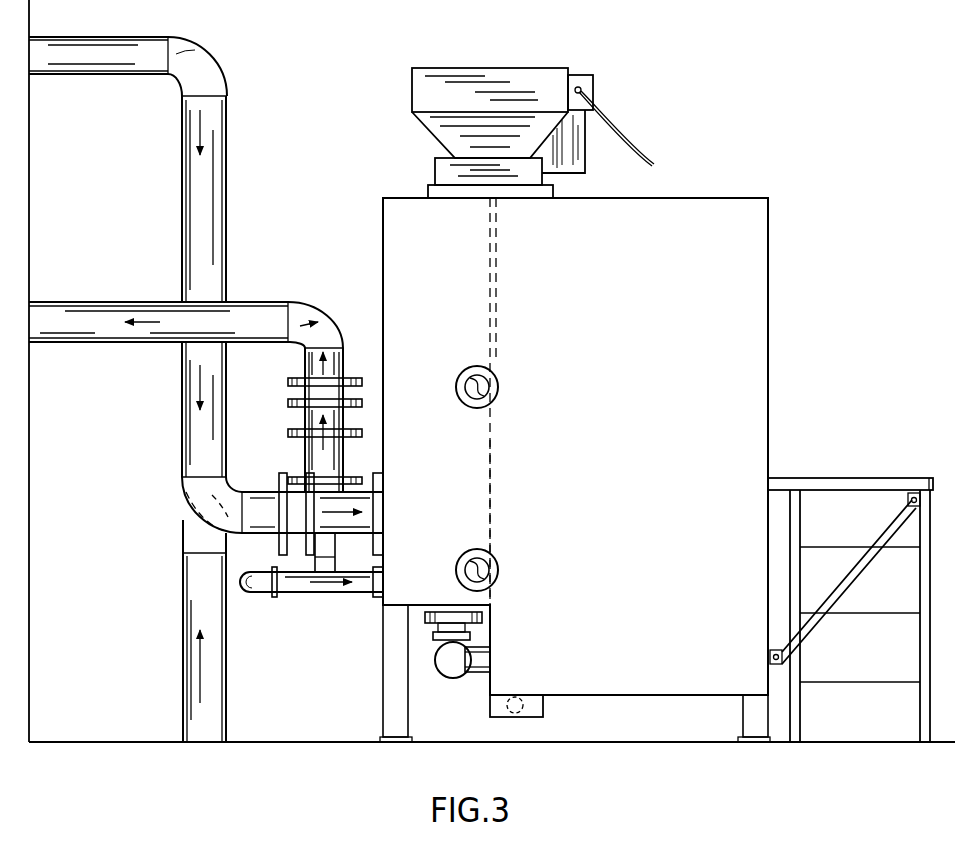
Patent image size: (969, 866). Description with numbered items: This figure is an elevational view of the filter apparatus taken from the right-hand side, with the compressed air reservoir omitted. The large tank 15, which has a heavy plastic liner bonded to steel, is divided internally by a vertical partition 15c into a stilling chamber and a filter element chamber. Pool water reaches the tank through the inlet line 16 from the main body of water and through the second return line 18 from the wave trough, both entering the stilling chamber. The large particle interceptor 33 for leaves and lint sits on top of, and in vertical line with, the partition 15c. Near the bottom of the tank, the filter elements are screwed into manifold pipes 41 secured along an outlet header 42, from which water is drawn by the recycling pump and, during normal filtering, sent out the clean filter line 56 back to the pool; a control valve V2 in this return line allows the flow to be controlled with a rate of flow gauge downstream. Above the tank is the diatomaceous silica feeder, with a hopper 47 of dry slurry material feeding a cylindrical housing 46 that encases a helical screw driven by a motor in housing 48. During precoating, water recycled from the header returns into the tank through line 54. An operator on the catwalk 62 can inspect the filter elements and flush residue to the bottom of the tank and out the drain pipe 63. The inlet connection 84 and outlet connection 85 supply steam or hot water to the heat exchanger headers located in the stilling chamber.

The tank 15 is at (648, 275).
The vertical partition 15c is at (490, 482).
The inlet line 16 is at (202, 619).
The second return line 18 is at (115, 56).
The large particle interceptor 33 is at (498, 250).
The manifold pipes 41 is at (482, 658).
The outlet header 42 is at (453, 672).
The cylindrical housing 46 is at (435, 168).
The hopper 47 is at (527, 78).
The motor housing 48 is at (588, 84).
The recycling line 54 is at (302, 580).
The clean filter line 56 is at (97, 326).
The catwalk 62 is at (840, 486).
The drain pipe 63 is at (523, 705).
The inlet connection 84 is at (495, 388).
The outlet connection 85 is at (495, 570).
The control valve V2 is at (310, 393).